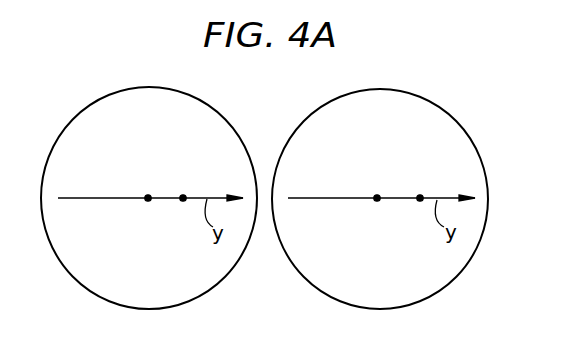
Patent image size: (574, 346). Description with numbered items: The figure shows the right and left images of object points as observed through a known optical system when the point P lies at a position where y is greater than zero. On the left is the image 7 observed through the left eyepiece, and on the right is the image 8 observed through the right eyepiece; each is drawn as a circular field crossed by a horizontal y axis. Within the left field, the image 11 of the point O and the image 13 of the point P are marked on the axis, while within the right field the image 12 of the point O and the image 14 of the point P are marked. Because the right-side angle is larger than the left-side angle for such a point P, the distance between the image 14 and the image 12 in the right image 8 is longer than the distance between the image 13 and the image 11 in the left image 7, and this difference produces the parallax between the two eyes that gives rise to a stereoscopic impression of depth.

The image observed through the left eyepiece 7 is at (217, 120).
The image observed through the right eyepiece 8 is at (443, 122).
The image of the point O 11 is at (148, 195).
The image of the point O 12 is at (377, 195).
The image of the point P 13 is at (183, 195).
The image of the point P 14 is at (420, 195).